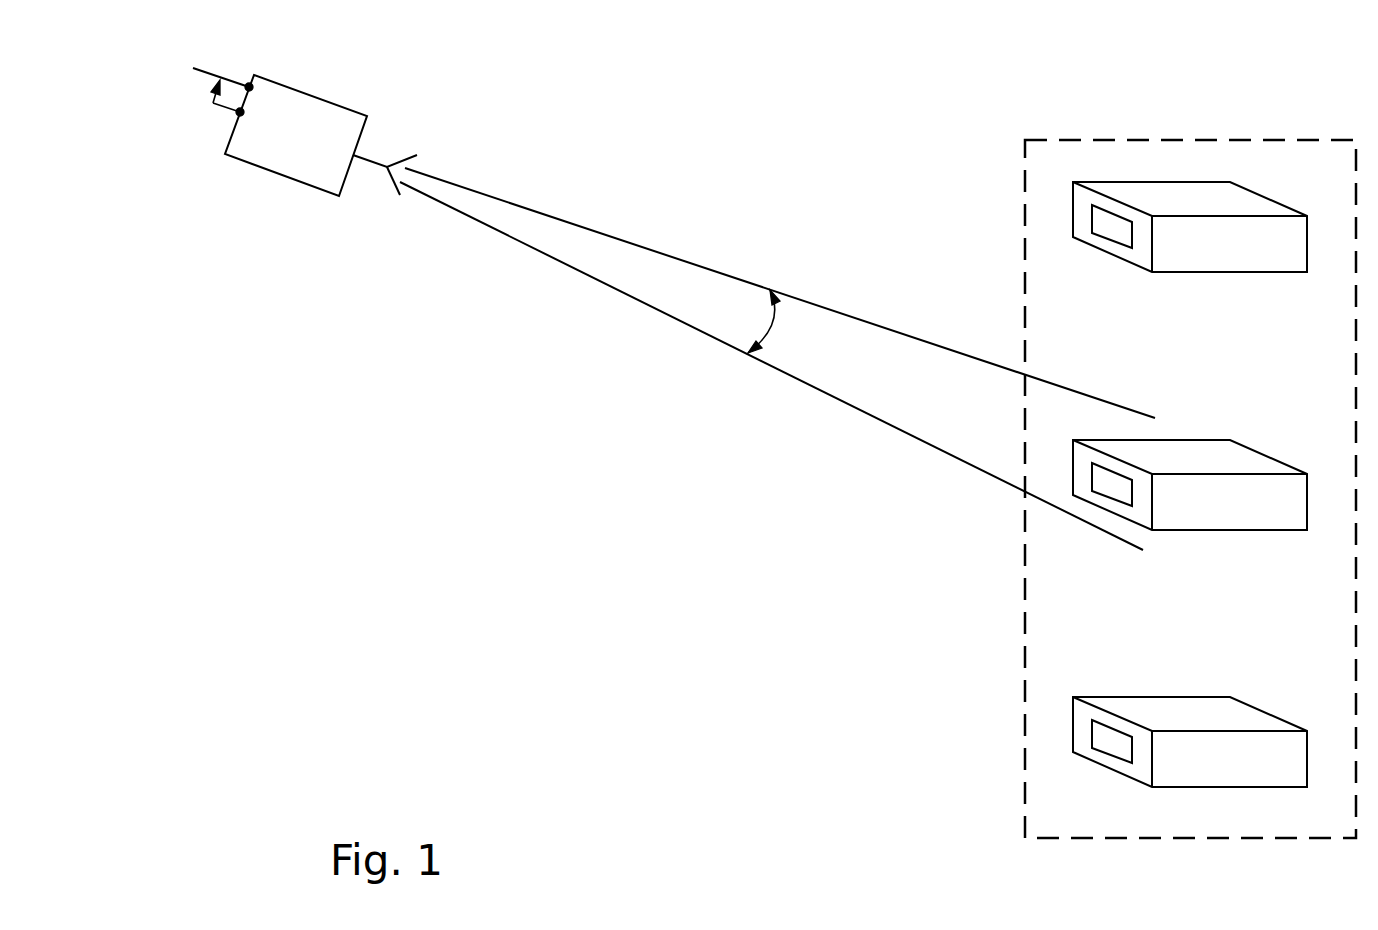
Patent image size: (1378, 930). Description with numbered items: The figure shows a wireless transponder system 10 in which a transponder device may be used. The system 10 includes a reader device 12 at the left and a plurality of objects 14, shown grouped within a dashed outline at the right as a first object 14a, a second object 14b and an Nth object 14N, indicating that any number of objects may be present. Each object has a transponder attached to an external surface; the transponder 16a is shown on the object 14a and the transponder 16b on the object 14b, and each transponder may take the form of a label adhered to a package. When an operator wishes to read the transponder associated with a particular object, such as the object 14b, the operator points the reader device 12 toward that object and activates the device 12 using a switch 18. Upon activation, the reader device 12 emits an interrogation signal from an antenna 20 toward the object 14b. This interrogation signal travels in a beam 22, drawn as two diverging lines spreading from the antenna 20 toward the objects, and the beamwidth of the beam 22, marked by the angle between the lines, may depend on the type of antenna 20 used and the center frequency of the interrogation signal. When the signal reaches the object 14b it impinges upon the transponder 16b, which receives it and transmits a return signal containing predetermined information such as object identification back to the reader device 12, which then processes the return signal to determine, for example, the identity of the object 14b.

The wireless transponder system 10 is at (898, 122).
The reader device 12 is at (296, 120).
The plurality of objects 14 is at (1178, 140).
The object 14a is at (1192, 257).
The object 14b is at (1190, 482).
The object 14N is at (1240, 773).
The transponder 16a is at (1107, 238).
The transponder 16b is at (1112, 468).
The switch 18 is at (213, 103).
The antenna 20 is at (366, 162).
The beam 22 is at (692, 327).